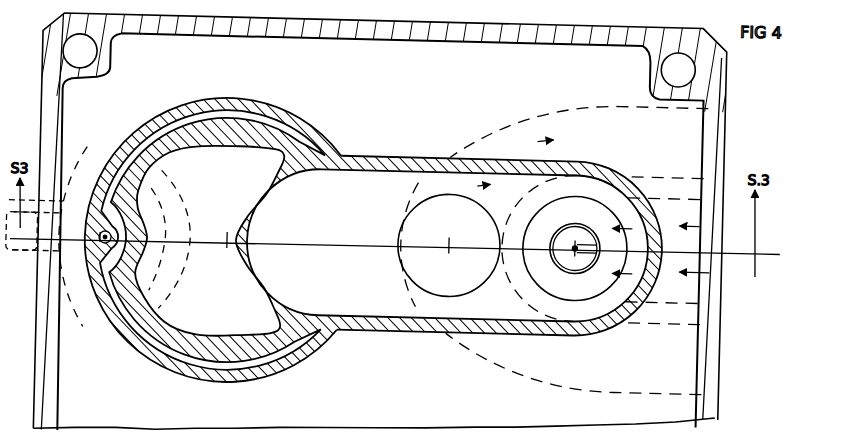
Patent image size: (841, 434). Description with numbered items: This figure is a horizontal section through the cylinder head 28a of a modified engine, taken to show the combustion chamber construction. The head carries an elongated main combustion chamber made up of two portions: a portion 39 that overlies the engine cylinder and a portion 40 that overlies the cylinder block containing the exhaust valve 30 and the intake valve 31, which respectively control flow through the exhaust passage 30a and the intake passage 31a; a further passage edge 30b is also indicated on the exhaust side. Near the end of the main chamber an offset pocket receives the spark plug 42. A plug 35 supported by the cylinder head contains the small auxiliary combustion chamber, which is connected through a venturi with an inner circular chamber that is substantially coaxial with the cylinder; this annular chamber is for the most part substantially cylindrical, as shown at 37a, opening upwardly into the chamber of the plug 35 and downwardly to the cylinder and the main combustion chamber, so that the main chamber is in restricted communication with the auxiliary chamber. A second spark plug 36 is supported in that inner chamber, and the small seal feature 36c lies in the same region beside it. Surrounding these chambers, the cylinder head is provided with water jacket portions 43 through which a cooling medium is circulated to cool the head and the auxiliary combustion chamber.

The cylinder head 28a is at (287, 15).
The water jacket portions 43 is at (380, 223).
The plug 35 is at (108, 161).
The substantially cylindrical portion of the annular combustion chamber 37a is at (268, 123).
The main combustion chamber portion overlying the cylinder 39 is at (447, 246).
The seal 36c is at (110, 236).
The spark plug 36 is at (23, 262).
The exhaust valve 30 is at (448, 245).
The intake valve 31 is at (614, 249).
The spark plug 42 is at (574, 248).
The main combustion chamber portion overlying the valves 40 is at (593, 231).
The exhaust passage 30a is at (731, 131).
The lower hidden edge 30b is at (730, 348).
The intake passage 31a is at (395, 244).